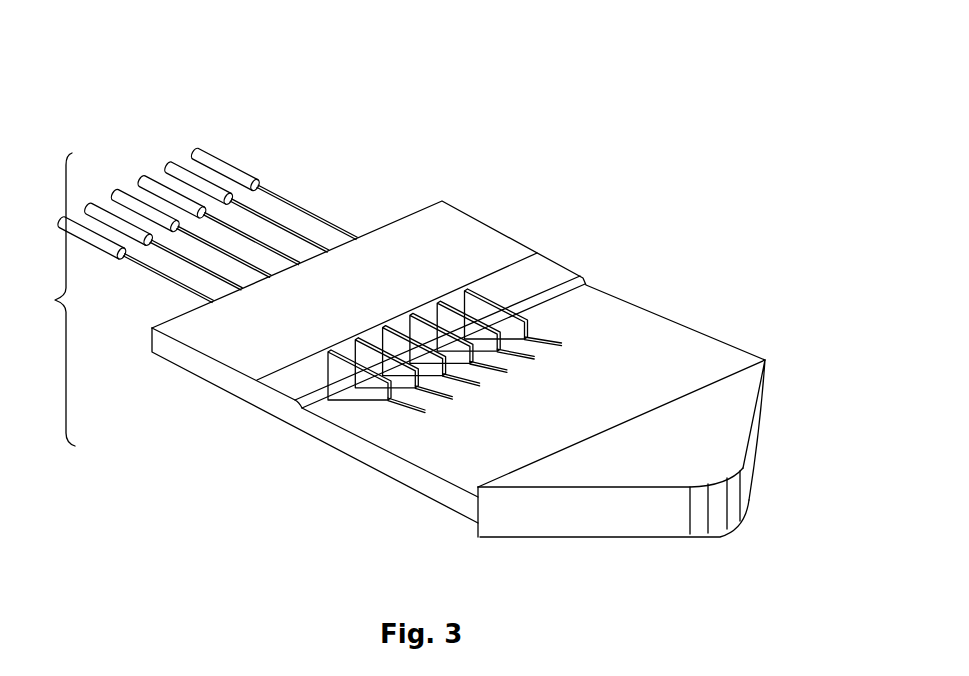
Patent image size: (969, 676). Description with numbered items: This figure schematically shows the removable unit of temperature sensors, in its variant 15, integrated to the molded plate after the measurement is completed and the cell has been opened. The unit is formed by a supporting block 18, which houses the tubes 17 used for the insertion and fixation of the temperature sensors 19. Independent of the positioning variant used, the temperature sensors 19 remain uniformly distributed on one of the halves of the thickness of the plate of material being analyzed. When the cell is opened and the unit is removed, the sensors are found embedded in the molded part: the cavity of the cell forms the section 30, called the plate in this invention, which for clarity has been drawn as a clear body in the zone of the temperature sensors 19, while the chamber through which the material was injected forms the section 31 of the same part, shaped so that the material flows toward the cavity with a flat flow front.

The variant of the removable unit of temperature sensors 15 is at (47, 299).
The tubes 17 is at (579, 318).
The supporting block 18 is at (445, 260).
The temperature sensors 19 is at (288, 151).
The plate section 30 is at (697, 313).
The chamber section 31 is at (779, 409).